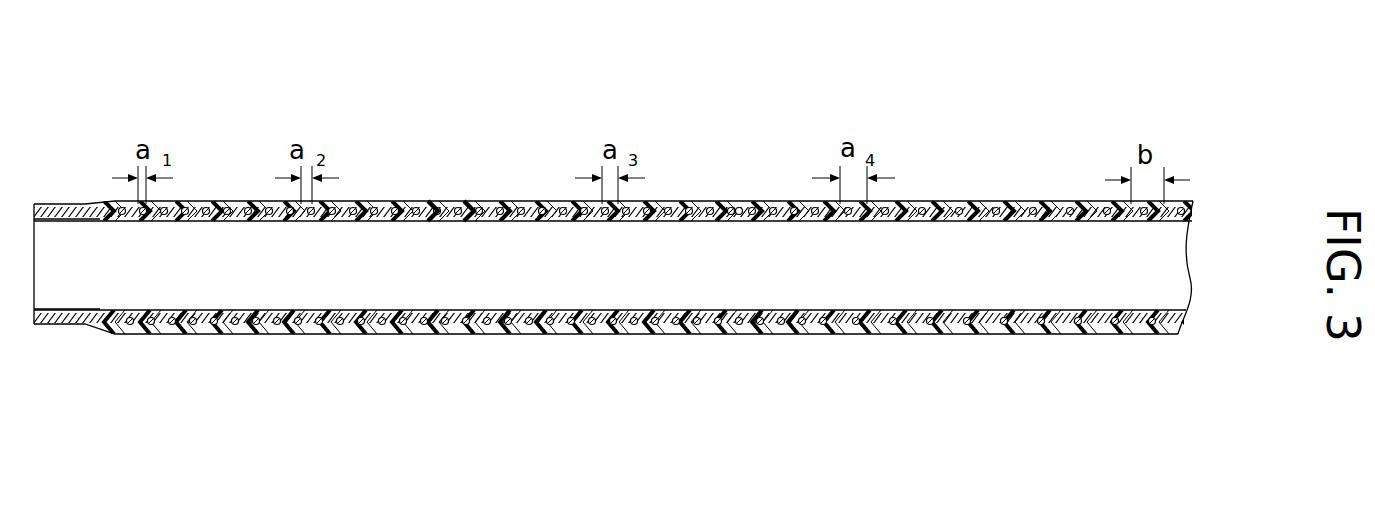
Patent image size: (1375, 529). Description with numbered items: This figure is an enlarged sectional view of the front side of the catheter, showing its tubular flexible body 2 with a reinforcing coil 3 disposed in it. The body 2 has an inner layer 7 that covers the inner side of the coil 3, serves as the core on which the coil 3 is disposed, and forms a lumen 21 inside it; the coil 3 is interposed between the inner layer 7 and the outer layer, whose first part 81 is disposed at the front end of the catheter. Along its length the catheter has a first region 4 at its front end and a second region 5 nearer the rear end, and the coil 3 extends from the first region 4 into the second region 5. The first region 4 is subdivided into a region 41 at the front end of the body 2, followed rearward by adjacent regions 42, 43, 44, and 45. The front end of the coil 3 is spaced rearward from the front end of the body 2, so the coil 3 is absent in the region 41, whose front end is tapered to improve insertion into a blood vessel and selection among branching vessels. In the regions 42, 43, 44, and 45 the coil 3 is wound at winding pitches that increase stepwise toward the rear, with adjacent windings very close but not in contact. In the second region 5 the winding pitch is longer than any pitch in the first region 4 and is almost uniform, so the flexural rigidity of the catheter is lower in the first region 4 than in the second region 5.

The body 2 is at (984, 172).
The lumen 21 is at (600, 289).
The inner layer 7 is at (60, 205).
The coil 3 is at (424, 202).
The first part 81 is at (739, 203).
The region 41 is at (120, 348).
The region 42 is at (287, 348).
The region 43 is at (533, 348).
The region 44 is at (818, 348).
The region 45 is at (1118, 348).
The second region 5 is at (1128, 348).
The first region 4 is at (1118, 455).